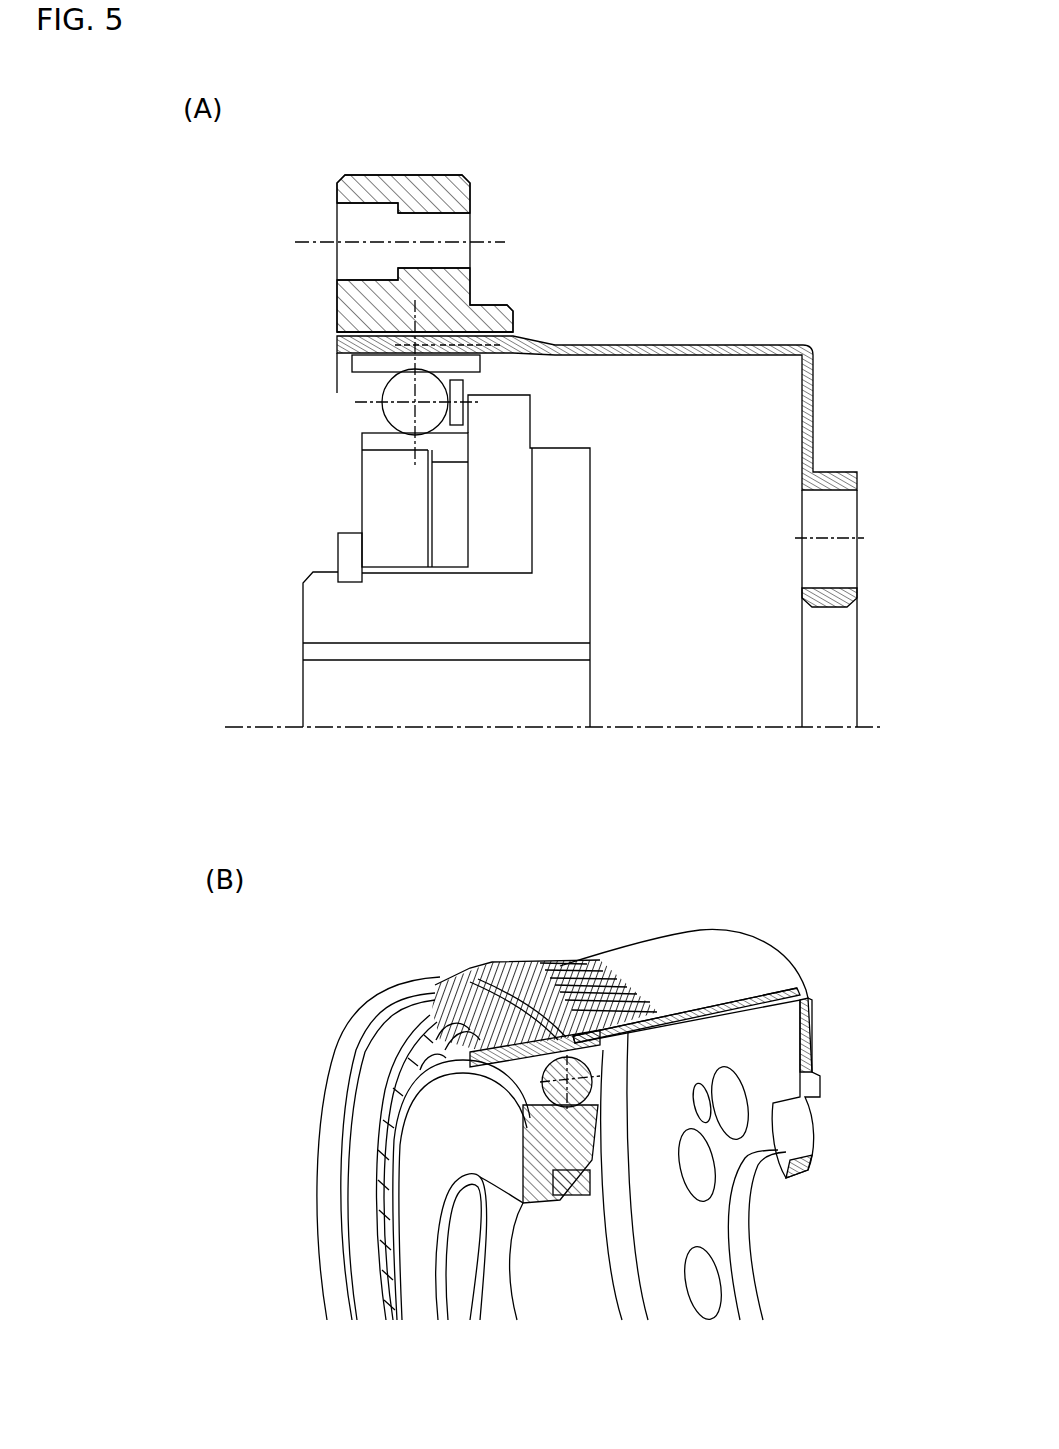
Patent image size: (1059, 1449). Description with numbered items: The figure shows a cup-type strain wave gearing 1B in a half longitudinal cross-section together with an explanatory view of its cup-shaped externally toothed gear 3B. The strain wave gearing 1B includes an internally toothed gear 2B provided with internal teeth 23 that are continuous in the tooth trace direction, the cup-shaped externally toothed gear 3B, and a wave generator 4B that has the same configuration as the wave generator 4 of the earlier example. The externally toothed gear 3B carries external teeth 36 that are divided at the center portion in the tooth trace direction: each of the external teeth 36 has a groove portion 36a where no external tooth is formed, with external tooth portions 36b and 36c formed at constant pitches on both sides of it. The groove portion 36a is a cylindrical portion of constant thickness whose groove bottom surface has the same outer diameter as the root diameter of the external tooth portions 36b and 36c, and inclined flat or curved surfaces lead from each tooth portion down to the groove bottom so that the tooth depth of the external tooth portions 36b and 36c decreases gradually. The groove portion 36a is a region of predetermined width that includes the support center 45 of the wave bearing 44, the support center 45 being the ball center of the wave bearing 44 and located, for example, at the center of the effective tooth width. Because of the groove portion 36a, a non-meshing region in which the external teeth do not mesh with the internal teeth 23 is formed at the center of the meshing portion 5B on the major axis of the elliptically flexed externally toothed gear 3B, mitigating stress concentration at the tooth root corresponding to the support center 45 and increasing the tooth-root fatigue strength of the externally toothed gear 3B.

The strain wave gearing 1B is at (569, 273).
The internally toothed gear 2B is at (495, 291).
The externally toothed gear 3B is at (562, 326).
The wave generator 4B is at (346, 513).
The meshing portion 5B is at (413, 705).
The internal teeth 23 is at (400, 333).
The external teeth 36 is at (585, 895).
The groove portion 36a is at (402, 355).
The external tooth portion 36b is at (356, 361).
The external tooth portion 36c is at (472, 353).
The support center 45 is at (420, 405).
The wave bearing 44 is at (366, 1121).
The wave generator 4 is at (332, 1273).